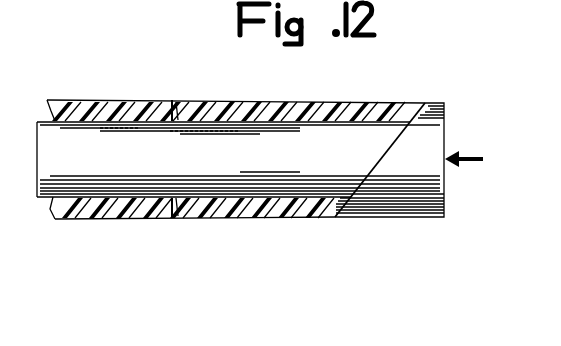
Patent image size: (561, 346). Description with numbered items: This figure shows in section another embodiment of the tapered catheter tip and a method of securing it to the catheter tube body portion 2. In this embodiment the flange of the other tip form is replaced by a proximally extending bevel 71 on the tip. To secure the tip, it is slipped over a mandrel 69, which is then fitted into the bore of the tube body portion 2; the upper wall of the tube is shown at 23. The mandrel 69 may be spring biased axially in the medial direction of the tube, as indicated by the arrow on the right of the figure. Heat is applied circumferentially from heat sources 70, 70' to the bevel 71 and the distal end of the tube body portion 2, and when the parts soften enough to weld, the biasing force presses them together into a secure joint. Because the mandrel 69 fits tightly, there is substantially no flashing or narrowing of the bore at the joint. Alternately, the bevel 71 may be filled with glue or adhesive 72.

The tube body portion 2 is at (80, 211).
The tubular body wall (upper) 23 is at (315, 110).
The mandrel 69 is at (342, 165).
The heat source 70 is at (177, 77).
The heat source 70' is at (181, 246).
The proximally extending bevel 71 is at (183, 98).
The glue or adhesive 72 is at (177, 223).